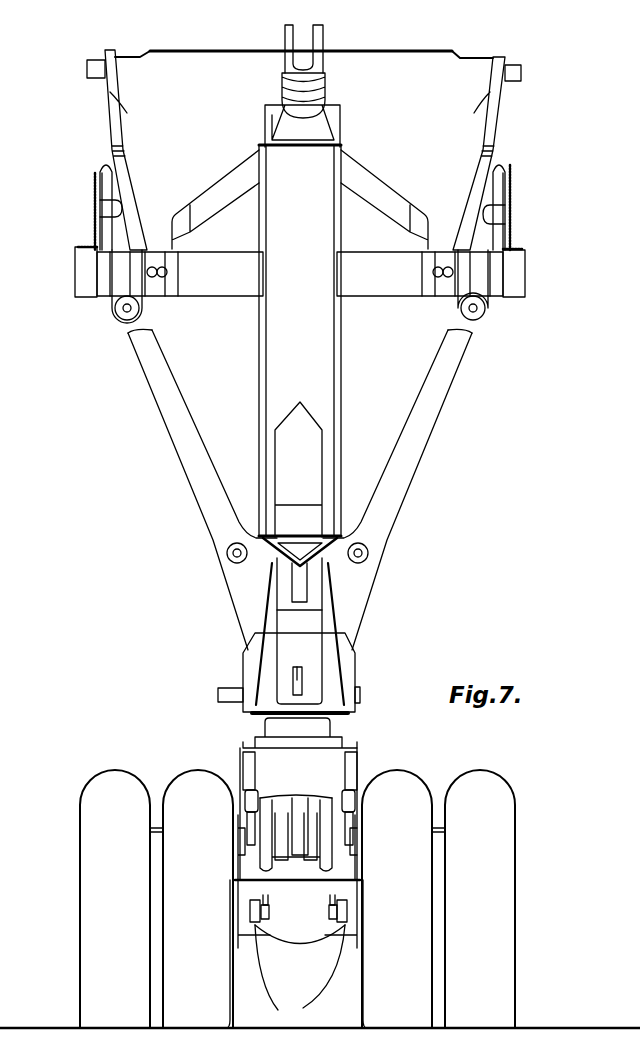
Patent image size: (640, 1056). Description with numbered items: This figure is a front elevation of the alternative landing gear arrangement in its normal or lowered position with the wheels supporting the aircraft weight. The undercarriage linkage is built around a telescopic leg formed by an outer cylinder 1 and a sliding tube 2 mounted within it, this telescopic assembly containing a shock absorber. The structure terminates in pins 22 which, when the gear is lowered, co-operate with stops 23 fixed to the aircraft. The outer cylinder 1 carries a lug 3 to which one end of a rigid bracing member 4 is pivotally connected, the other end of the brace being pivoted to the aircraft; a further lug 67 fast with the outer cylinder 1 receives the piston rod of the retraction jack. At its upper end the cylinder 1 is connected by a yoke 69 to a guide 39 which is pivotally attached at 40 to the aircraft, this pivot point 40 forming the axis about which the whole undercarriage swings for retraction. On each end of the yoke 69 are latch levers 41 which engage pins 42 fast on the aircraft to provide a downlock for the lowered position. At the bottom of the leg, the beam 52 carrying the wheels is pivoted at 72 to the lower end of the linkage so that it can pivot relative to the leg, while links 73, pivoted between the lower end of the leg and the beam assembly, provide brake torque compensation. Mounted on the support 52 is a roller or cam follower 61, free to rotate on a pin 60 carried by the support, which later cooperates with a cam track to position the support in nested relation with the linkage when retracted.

The outer cylinder 1 is at (315, 281).
The sliding tube 2 is at (323, 723).
The lug 3 is at (320, 635).
The rigid bracing member 4 is at (335, 356).
The pins 22 is at (522, 288).
The stops 23 is at (520, 248).
The guide 39 is at (216, 62).
The pivot point 40 is at (536, 83).
The latch levers 41 is at (540, 172).
The pins 42 is at (540, 214).
The beam 52 is at (310, 940).
The pin 60 is at (296, 954).
The roller or cam follower 61 is at (300, 972).
The lug 67 is at (297, 676).
The yoke 69 is at (204, 283).
The pivot 72 is at (240, 842).
The links 73 is at (248, 780).